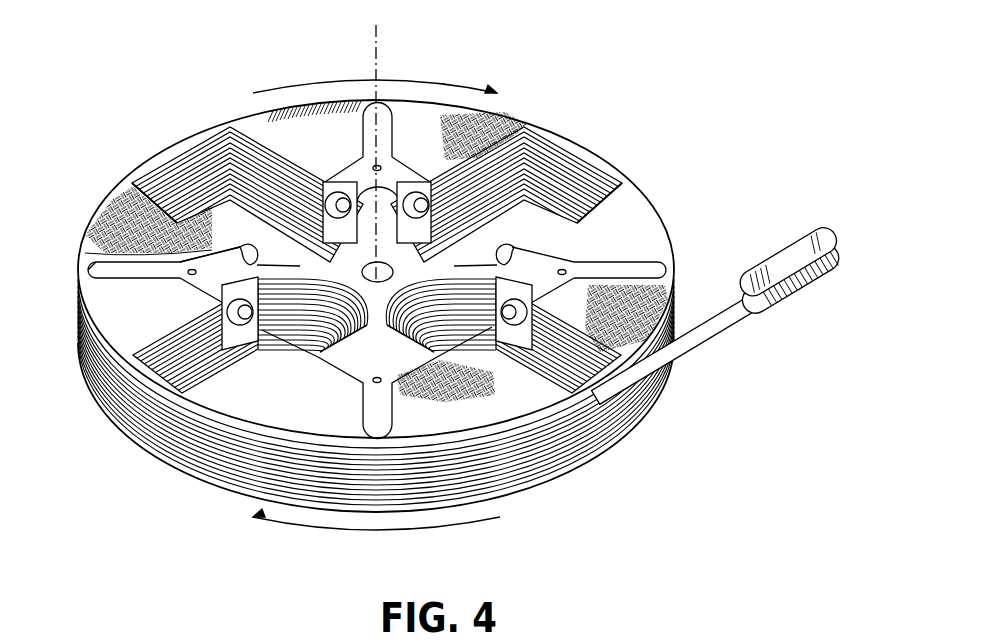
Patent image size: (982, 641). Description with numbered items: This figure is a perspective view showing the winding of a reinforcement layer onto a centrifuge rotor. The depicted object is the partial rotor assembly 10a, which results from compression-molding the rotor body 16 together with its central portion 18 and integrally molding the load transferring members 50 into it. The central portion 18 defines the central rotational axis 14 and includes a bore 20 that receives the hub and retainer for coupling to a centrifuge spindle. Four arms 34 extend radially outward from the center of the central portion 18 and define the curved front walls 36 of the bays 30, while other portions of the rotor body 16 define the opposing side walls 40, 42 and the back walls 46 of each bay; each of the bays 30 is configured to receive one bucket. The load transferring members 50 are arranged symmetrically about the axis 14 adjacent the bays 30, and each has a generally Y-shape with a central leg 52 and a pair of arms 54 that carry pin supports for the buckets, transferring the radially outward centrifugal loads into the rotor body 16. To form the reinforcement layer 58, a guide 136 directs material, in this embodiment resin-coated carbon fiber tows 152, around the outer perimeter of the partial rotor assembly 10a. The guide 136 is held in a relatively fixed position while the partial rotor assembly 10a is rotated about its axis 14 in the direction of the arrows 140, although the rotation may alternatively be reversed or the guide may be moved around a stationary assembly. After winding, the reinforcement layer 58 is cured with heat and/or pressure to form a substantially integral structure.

The partial rotor assembly 10a is at (650, 198).
The axis 14 is at (372, 41).
The rotor body 16 is at (460, 128).
The central portion 18 is at (450, 262).
The bore 20 is at (393, 271).
The bays 30 is at (160, 180).
The arms 34 is at (247, 255).
The curved front walls 36 is at (296, 284).
The side wall 40 is at (240, 150).
The side wall 42 is at (170, 183).
The back walls 46 is at (216, 162).
The load transferring members 50 is at (386, 145).
The central leg 52 is at (362, 420).
The arms 54 is at (335, 347).
The reinforcement layer 58 is at (652, 398).
The guide 136 is at (772, 260).
The arrows 140 is at (425, 78).
The fiber tows 152 is at (717, 318).